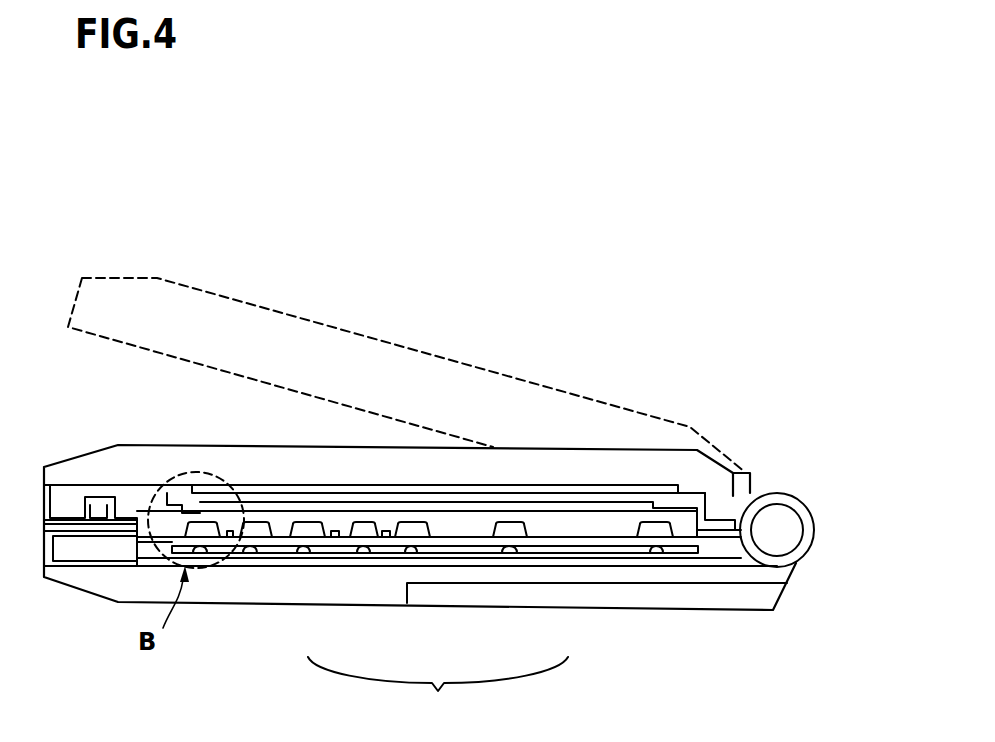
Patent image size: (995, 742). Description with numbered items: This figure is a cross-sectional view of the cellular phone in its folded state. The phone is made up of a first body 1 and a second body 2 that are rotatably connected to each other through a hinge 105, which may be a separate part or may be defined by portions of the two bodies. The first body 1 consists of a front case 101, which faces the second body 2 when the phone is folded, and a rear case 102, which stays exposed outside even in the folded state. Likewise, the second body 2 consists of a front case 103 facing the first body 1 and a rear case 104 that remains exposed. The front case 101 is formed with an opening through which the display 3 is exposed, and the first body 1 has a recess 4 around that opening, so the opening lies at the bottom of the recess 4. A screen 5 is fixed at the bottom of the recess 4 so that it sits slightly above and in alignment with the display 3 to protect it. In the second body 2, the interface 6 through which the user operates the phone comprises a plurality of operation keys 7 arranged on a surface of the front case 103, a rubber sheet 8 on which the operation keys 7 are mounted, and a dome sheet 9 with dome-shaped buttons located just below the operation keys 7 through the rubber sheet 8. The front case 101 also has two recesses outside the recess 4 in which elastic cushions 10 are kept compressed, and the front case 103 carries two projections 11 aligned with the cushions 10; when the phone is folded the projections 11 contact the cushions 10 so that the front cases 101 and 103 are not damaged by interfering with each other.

The first body 1 is at (413, 363).
The second body 2 is at (223, 592).
The display 3 is at (460, 502).
The recess 4 is at (706, 500).
The screen 5 is at (253, 510).
The interface 6 is at (438, 692).
The operation keys 7 is at (267, 532).
The rubber sheet 8 is at (377, 546).
The dome sheet 9 is at (507, 553).
The cushions 10 is at (78, 495).
The projections 11 is at (68, 560).
The front case 101 is at (127, 515).
The rear case 102 is at (637, 470).
The front case 103 is at (98, 547).
The rear case 104 is at (617, 577).
The hinge 105 is at (773, 532).